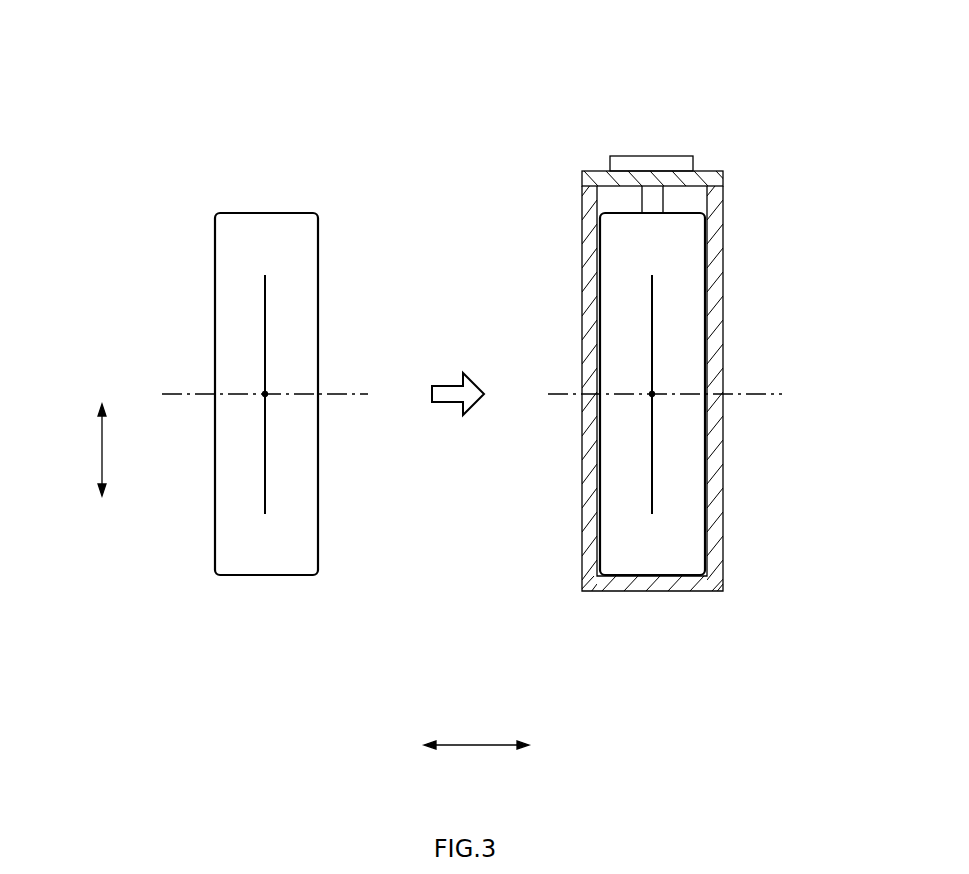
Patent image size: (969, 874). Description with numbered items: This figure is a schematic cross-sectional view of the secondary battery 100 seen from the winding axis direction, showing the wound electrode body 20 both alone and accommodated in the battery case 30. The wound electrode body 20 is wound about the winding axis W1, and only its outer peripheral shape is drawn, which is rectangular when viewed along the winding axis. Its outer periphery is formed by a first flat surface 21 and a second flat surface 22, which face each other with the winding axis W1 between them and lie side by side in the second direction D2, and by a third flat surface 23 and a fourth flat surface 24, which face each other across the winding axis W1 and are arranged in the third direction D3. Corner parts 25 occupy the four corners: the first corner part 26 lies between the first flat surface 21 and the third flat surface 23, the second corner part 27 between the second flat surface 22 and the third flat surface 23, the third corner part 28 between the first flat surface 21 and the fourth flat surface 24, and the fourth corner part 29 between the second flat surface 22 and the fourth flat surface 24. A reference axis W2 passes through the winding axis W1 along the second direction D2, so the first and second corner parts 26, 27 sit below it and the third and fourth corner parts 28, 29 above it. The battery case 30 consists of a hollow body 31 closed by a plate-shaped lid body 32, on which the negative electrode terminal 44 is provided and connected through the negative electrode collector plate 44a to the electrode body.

The secondary battery 100 is at (745, 82).
The wound electrode body 20 is at (481, 370).
The first flat surface 21 is at (214, 324).
The second flat surface 22 is at (319, 490).
The third flat surface 23 is at (265, 577).
The fourth flat surface 24 is at (265, 212).
The corner parts 25 is at (481, 402).
The first corner part 26 is at (216, 578).
The second corner part 27 is at (320, 578).
The third corner part 28 is at (216, 211).
The fourth corner part 29 is at (320, 212).
The battery case 30 is at (681, 345).
The body 31 is at (724, 500).
The lid body 32 is at (597, 170).
The negative electrode terminal 44 is at (681, 149).
The negative electrode collector plate 44a is at (664, 200).
The winding axis W1 is at (267, 393).
The reference axis W2 is at (345, 391).
The second direction D2 is at (476, 761).
The third direction D3 is at (83, 450).